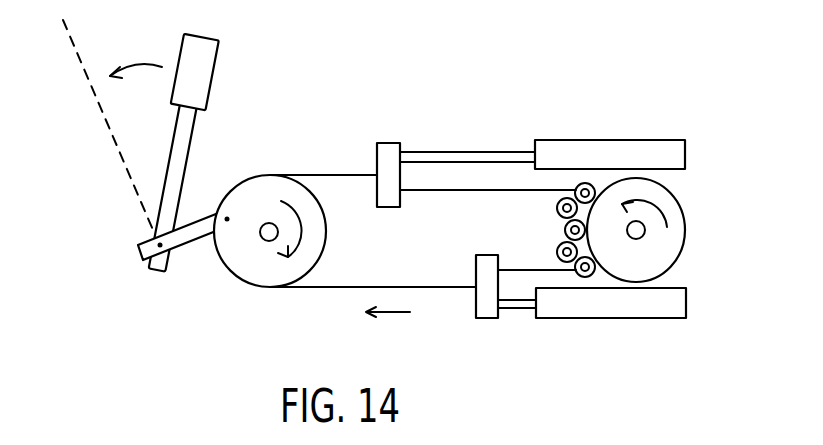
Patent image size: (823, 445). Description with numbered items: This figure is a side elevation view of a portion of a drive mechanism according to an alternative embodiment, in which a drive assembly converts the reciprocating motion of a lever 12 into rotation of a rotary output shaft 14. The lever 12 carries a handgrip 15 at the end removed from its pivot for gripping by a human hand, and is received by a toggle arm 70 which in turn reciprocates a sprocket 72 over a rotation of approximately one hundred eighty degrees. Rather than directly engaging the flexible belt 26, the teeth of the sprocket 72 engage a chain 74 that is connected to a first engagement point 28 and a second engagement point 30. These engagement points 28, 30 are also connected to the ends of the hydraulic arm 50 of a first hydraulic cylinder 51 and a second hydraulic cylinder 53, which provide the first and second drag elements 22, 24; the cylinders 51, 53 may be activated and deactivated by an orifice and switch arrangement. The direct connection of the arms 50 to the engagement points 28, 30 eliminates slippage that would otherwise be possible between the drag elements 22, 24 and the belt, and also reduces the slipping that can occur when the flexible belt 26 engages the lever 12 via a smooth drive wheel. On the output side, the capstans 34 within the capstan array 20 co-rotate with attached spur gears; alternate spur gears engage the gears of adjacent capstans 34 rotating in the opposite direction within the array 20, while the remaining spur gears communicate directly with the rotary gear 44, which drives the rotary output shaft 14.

The lever 12 is at (193, 137).
The rotary output shaft 14 is at (641, 237).
The handgrip 15 is at (215, 72).
The capstan array 20 is at (543, 230).
The first drag element 22 is at (516, 120).
The second drag element 24 is at (536, 327).
The flexible belt 26 is at (421, 191).
The first engagement point 28 is at (359, 154).
The second engagement point 30 is at (460, 309).
The capstans 34 is at (557, 204).
The rotary gear 44 is at (672, 203).
The hydraulic arm 50 is at (465, 151).
The first hydraulic cylinder 51 is at (612, 140).
The second hydraulic cylinder 53 is at (630, 318).
The toggle arm 70 is at (188, 233).
The sprocket 72 is at (248, 270).
The chain 74 is at (320, 288).